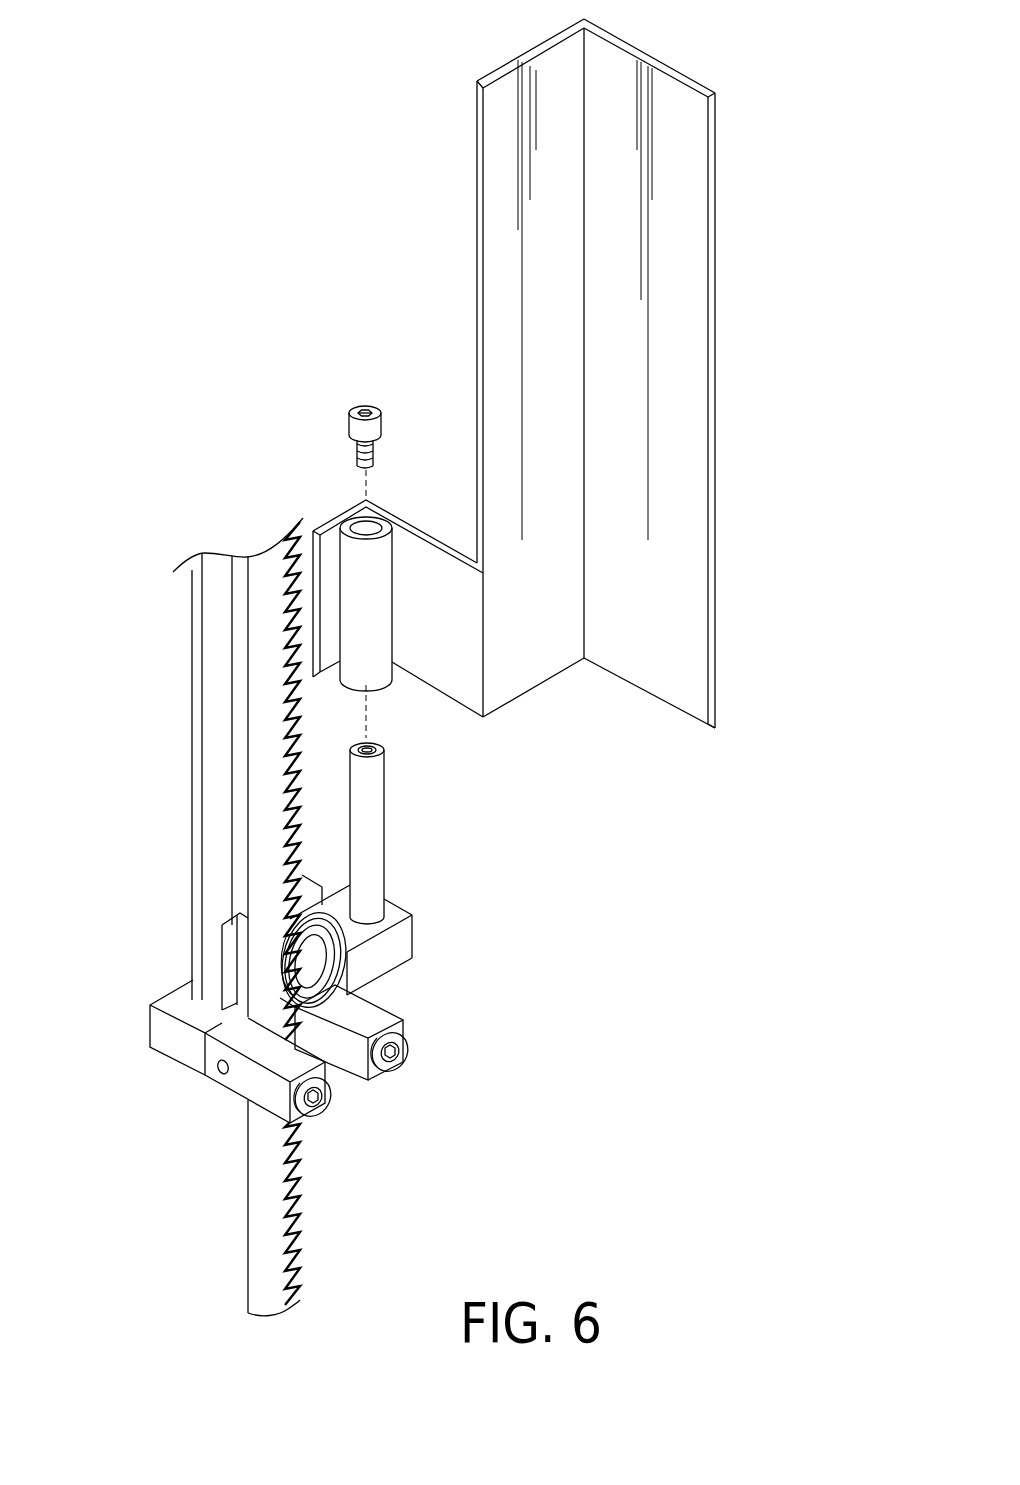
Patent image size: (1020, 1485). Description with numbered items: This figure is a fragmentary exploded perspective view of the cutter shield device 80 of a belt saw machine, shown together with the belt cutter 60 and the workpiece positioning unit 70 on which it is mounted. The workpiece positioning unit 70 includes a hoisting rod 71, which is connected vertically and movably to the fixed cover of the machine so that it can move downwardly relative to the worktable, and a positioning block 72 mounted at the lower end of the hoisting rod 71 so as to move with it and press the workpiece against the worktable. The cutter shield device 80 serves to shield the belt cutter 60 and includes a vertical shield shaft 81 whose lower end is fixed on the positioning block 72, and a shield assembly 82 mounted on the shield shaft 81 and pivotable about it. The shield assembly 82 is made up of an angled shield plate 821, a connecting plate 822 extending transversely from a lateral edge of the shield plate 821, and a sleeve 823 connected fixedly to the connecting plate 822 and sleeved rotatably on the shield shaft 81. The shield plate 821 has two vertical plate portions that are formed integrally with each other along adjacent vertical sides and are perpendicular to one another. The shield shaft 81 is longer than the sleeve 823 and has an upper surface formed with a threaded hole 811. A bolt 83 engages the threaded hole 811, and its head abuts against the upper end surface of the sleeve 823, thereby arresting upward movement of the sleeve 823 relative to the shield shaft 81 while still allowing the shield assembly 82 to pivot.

The belt cutter 60 is at (263, 653).
The workpiece positioning unit 70 is at (170, 883).
The hoisting rod 71 is at (192, 767).
The positioning block 72 is at (413, 943).
The cutter shield device 80 is at (735, 259).
The shield shaft 81 is at (358, 835).
The threaded hole 811 is at (377, 743).
The shield assembly 82 is at (680, 72).
The shield plate 821 is at (700, 445).
The connecting plate 822 is at (415, 538).
The sleeve 823 is at (355, 563).
The bolt 83 is at (360, 408).